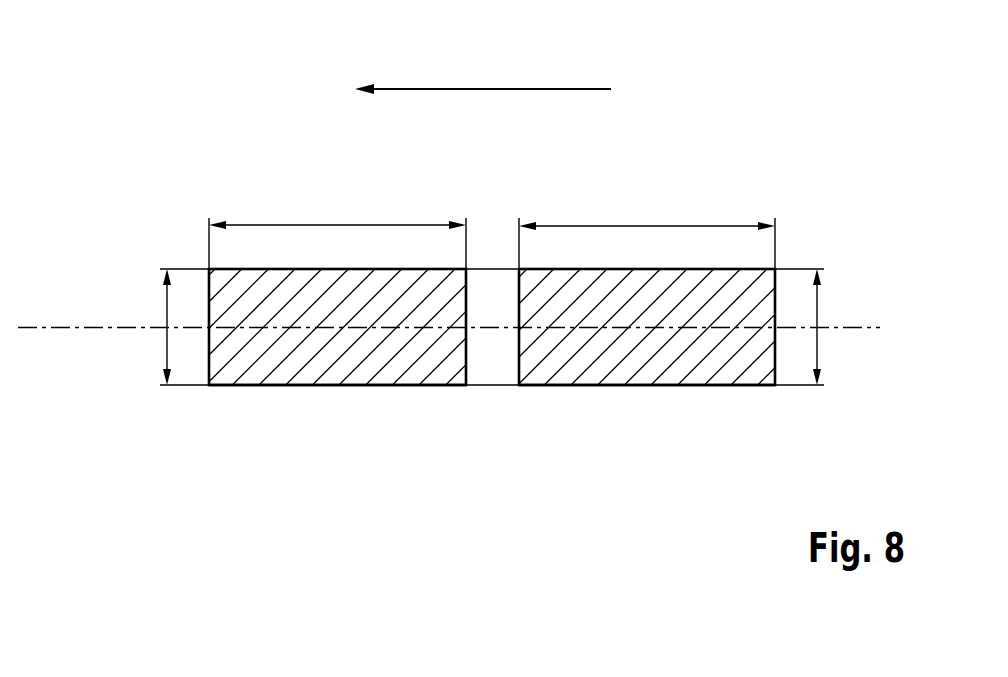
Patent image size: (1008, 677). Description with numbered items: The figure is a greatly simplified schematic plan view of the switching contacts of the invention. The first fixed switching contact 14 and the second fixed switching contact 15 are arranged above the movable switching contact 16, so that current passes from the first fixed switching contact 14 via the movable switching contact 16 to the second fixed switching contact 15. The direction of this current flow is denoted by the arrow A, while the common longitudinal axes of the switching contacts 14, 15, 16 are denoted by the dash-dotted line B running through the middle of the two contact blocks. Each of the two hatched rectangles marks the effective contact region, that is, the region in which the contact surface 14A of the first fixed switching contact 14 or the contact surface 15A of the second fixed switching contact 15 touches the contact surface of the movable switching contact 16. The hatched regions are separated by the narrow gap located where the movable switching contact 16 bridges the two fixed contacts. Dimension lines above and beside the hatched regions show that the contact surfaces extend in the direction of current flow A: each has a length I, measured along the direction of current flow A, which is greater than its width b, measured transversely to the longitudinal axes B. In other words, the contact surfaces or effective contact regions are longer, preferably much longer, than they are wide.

The first fixed switching contact 14 is at (691, 262).
The second fixed switching contact 15 is at (389, 262).
The contact surface 14A is at (647, 375).
The contact surface 15A is at (335, 375).
The movable switching contact 16 is at (492, 392).
The direction of current flow A is at (492, 89).
The longitudinal axes B is at (60, 328).
The width b is at (165, 300).
The length I is at (302, 225).